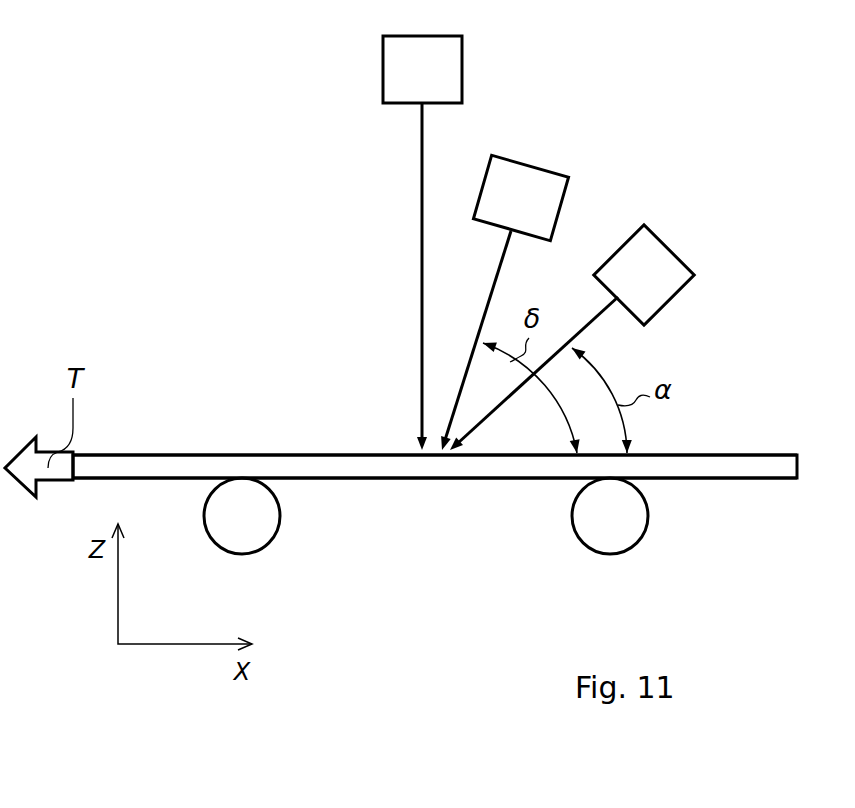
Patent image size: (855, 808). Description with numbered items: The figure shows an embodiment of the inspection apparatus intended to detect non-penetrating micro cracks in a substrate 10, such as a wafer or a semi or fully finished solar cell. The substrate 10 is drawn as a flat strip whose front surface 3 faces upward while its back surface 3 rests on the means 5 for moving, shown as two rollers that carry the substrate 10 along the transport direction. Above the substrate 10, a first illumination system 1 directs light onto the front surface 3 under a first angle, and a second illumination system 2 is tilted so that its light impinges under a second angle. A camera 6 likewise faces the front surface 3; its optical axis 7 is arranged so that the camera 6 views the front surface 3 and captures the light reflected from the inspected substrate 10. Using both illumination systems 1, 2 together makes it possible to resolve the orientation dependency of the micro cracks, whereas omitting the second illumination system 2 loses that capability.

The first illumination system 1 is at (635, 290).
The second illumination system 2 is at (512, 212).
The surfaces of the substrate 3 is at (120, 440).
The means for moving 5 is at (270, 521).
The camera 6 is at (413, 84).
The optical axis of camera 7 is at (422, 231).
The substrate 10 is at (742, 467).